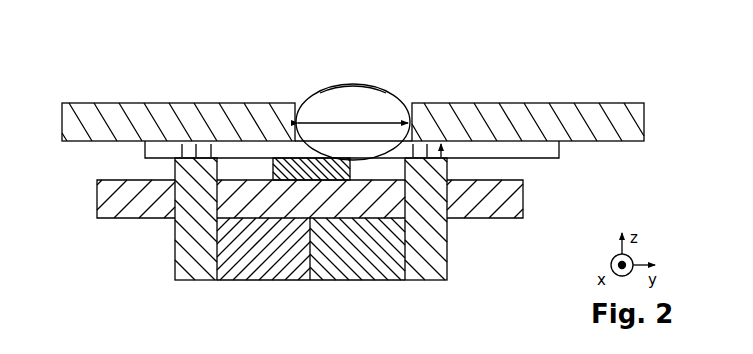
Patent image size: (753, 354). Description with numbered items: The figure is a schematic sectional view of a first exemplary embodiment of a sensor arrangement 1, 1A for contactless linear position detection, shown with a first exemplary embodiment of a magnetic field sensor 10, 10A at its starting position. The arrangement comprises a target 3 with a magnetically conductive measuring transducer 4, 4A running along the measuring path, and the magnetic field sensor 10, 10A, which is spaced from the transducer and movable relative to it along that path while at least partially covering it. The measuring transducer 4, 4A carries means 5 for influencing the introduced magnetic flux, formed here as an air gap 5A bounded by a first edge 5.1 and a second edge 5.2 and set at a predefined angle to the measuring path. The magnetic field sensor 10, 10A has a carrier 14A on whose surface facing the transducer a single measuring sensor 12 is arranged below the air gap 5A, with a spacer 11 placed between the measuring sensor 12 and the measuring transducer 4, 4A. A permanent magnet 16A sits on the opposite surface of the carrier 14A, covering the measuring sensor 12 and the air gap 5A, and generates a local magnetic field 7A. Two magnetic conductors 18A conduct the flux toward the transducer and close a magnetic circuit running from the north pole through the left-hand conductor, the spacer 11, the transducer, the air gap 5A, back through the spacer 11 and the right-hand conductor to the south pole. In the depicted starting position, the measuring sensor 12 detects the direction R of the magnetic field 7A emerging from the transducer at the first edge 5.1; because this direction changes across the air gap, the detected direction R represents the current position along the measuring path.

The sensor arrangement 1 is at (363, 82).
The sensor arrangement 1A is at (363, 82).
The target 3 is at (365, 86).
The measuring transducer 4 is at (523, 98).
The measuring transducer 4A is at (523, 98).
The means for influencing the magnetic flux 5 is at (353, 96).
The air gap 5A is at (353, 104).
The first edge of the air gap 5.1 is at (305, 118).
The second edge of the air gap 5.2 is at (403, 118).
The local magnetic field 7A is at (370, 82).
The magnetic field sensor 10 is at (319, 237).
The magnetic field sensor 10A is at (319, 237).
The spacer 11 is at (232, 150).
The measuring sensor 12 is at (318, 178).
The carrier 14A is at (502, 200).
The permanent magnet 16A is at (385, 262).
The magnetic conductor 18A is at (199, 262).
The direction of the magnetic field R is at (297, 170).